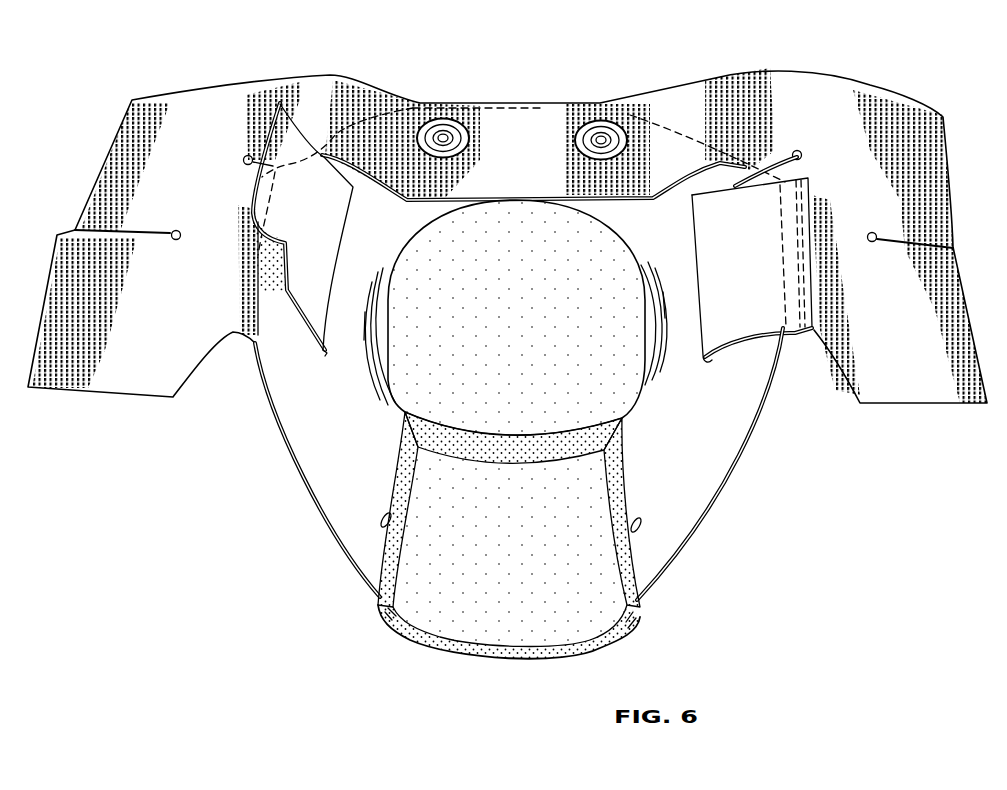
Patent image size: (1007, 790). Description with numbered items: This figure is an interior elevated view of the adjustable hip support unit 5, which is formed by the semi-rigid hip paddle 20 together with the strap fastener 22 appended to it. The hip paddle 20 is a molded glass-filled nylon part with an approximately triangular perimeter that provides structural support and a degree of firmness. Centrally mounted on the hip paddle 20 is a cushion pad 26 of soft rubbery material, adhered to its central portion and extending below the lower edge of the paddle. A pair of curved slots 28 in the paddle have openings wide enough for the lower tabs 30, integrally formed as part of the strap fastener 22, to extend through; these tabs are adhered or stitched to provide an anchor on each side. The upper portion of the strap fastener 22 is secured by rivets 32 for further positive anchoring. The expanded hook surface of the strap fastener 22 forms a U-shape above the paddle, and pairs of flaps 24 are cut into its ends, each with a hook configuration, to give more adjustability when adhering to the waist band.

The hip support unit 5 is at (512, 338).
The semi-rigid hip paddle 20 is at (707, 477).
The strap fastener 22 is at (706, 77).
The flaps 24 is at (133, 157).
The cushion pad 26 is at (640, 627).
The curved slots 28 is at (323, 353).
The lower tabs 30 is at (308, 227).
The rivets 32 is at (570, 117).